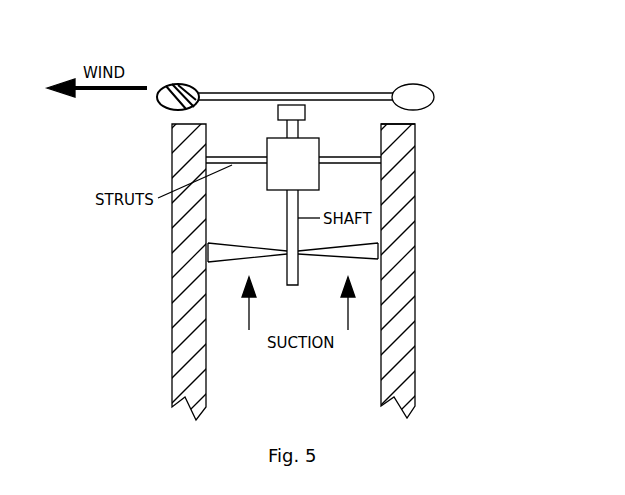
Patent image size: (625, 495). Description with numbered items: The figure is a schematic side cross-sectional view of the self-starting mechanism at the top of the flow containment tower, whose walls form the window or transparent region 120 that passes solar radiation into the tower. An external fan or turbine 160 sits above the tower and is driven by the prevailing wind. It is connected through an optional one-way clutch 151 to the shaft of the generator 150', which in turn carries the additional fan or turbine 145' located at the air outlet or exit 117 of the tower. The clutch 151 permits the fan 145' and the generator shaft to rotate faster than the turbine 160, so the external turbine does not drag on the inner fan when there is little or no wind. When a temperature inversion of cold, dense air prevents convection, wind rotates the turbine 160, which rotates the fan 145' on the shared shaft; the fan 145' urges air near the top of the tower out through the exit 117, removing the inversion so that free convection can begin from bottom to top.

The air outlet 117 is at (383, 125).
The transparent region 120 is at (415, 329).
The fan 145' is at (332, 236).
The generator 150' is at (371, 168).
The one-way clutch 151 is at (278, 112).
The external fan or turbine 160 is at (434, 97).